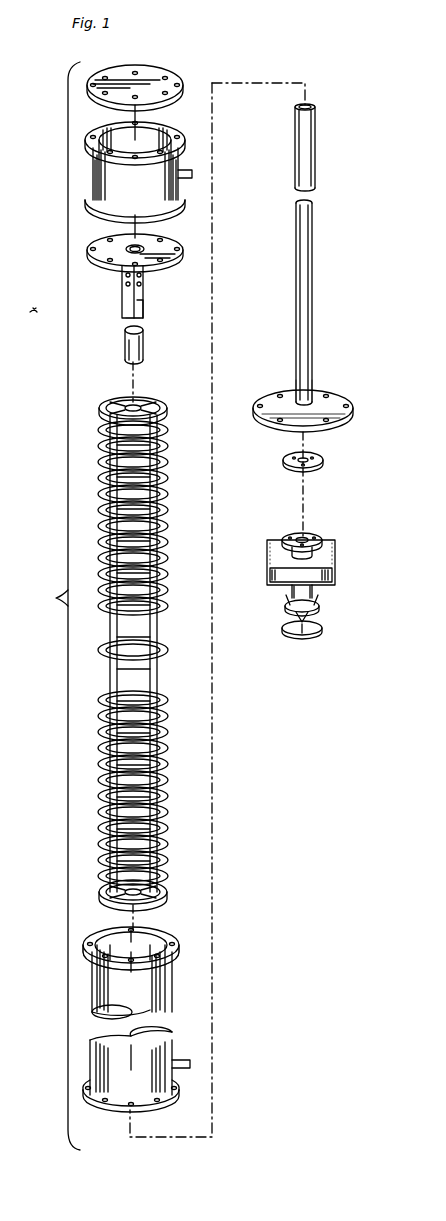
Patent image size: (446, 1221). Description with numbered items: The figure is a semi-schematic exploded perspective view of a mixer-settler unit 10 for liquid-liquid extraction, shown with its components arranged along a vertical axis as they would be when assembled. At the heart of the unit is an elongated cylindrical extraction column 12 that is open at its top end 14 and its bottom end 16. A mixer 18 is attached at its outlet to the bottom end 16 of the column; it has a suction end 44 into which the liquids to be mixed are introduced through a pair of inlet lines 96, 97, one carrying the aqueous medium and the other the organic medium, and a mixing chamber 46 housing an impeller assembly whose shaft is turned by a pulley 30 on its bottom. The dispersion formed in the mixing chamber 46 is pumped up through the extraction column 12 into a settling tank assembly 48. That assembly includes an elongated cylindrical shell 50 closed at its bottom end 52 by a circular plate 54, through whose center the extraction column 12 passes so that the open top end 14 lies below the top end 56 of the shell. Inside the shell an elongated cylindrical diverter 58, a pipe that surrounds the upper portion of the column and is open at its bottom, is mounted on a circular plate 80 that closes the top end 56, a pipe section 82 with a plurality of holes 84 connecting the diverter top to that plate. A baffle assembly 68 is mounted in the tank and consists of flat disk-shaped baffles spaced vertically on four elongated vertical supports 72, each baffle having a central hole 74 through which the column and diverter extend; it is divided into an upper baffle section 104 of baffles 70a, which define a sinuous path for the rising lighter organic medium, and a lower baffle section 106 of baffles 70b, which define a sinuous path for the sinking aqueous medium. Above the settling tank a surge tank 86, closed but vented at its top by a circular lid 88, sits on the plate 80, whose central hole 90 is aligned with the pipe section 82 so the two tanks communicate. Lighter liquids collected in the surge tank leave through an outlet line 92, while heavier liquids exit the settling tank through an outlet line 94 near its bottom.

The mixer-settler unit 10 is at (52, 598).
The extraction column 12 is at (314, 292).
The top end 14 is at (298, 108).
The bottom end 16 is at (306, 380).
The mixer 18 is at (338, 575).
The pulley 30 is at (302, 636).
The suction end 44 is at (314, 590).
The mixing chamber 46 is at (172, 740).
The settling tank assembly 48 is at (116, 320).
The shell 50 is at (94, 992).
The bottom end 52 is at (176, 1092).
The plate 54 is at (330, 422).
The top end 56 is at (178, 968).
The diverter 58 is at (140, 314).
The baffle assembly 68 is at (96, 476).
The baffles 70a is at (165, 442).
The baffles 70b is at (168, 735).
The vertical supports 72 is at (100, 406).
The hole 74 is at (145, 438).
The circular plate 80 is at (96, 252).
The pipe section 82 is at (122, 292).
The holes 84 is at (143, 296).
The surge tank 86 is at (96, 172).
The lid 88 is at (155, 75).
The hole 90 is at (140, 247).
The outlet line 92 is at (187, 170).
The outlet line 94 is at (190, 1062).
The inlet line 96 is at (318, 608).
The inlet line 97 is at (288, 598).
The upper baffle section 104 is at (134, 518).
The lower baffle section 106 is at (138, 788).